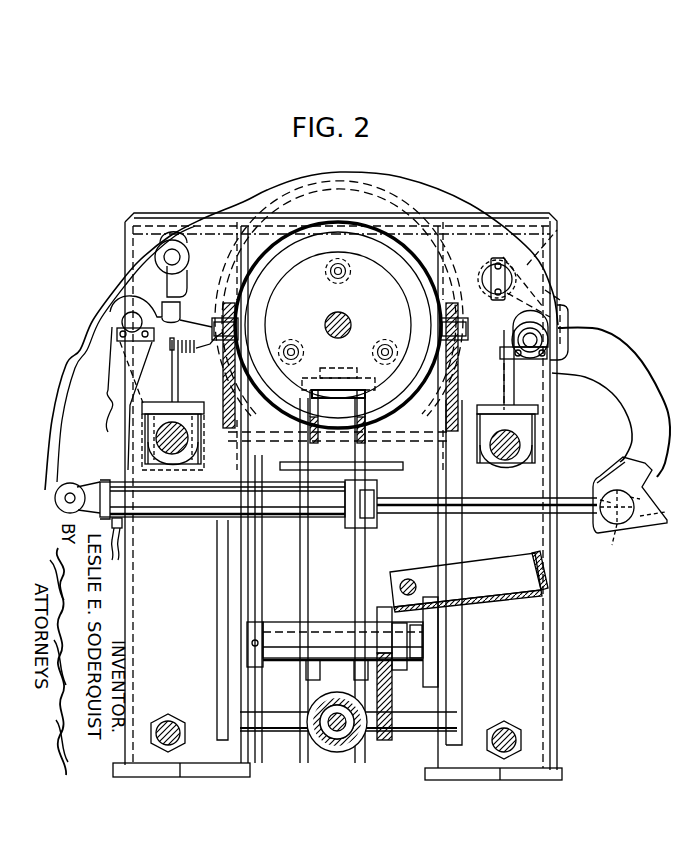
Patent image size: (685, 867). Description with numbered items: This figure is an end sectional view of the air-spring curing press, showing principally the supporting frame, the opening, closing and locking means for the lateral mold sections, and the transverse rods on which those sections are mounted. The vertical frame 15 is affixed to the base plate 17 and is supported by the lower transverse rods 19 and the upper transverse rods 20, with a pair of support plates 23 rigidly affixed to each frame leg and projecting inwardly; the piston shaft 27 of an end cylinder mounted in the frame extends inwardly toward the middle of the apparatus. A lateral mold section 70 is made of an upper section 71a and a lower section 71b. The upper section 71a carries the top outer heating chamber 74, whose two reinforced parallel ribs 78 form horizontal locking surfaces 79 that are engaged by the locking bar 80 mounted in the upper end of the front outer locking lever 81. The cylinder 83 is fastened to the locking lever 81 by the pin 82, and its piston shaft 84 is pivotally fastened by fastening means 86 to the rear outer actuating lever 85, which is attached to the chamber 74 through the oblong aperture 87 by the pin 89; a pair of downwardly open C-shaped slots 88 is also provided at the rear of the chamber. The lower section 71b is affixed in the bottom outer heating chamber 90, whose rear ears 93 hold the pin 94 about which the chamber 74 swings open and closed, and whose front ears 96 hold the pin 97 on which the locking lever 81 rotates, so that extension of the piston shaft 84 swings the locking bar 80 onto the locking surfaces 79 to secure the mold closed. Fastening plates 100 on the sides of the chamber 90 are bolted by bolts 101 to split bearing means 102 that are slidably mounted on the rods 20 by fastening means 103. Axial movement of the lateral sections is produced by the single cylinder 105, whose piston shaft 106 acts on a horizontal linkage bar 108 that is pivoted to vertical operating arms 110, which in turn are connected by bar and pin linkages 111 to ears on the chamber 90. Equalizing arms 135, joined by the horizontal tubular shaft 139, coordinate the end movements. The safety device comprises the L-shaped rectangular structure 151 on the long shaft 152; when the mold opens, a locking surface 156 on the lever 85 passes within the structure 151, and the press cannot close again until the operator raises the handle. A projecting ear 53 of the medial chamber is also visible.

The vertical frame 15 is at (533, 627).
The base plate 17 is at (250, 770).
The lower transverse rod 19 is at (178, 720).
The upper transverse rod 20 is at (165, 448).
The support plate 23 is at (255, 565).
The piston shaft 27 is at (348, 318).
The projecting ear 53 is at (568, 335).
The lateral mold section 70 is at (432, 205).
The upper section 71a is at (300, 243).
The lower section 71b is at (265, 365).
The top outer heating chamber 74 is at (370, 200).
The reinforced parallel rib 78 is at (243, 215).
The horizontal locking surface 79 is at (189, 262).
The locking bar 80 is at (172, 257).
The front outer locking lever 81 is at (82, 342).
The pin 82 is at (70, 483).
The cylinder 83 is at (290, 516).
The piston shaft 84 is at (500, 512).
The rear outer actuating lever 85 is at (612, 357).
The fastening means 86 is at (630, 509).
The oblong aperture 87 is at (505, 279).
The C-shaped slot 88 is at (560, 292).
The pin 89 is at (557, 237).
The bottom outer heating chamber 90 is at (395, 472).
The projecting ear 93 is at (530, 380).
The pin 94 is at (530, 340).
The projecting ear 96 is at (128, 355).
The pin 97 is at (128, 320).
The fastening plate 100 is at (150, 408).
The bolt 101 is at (150, 425).
The split bearing means 102 is at (168, 437).
The fastening means 103 is at (196, 523).
The cylinder 105 is at (355, 740).
The piston shaft 106 is at (337, 731).
The horizontal linkage bar 108 is at (298, 718).
The vertical operating arm 110 is at (222, 545).
The bar and pin linkage 111 is at (196, 342).
The equalizing arm 135 is at (320, 612).
The horizontal tubular shaft 139 is at (280, 636).
The L-shaped rectangular structure 151 is at (512, 580).
The long shaft 152 is at (405, 580).
The locking surface 156 is at (655, 524).